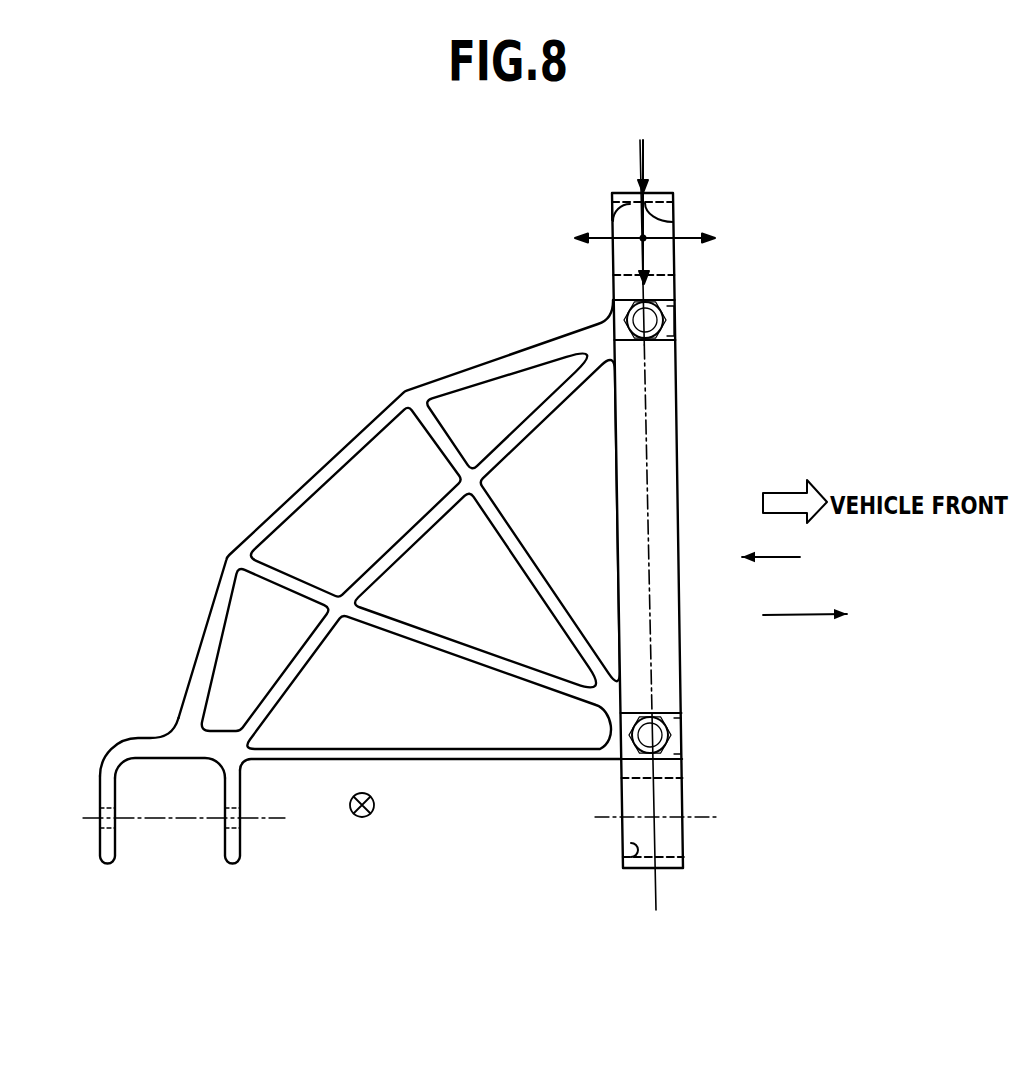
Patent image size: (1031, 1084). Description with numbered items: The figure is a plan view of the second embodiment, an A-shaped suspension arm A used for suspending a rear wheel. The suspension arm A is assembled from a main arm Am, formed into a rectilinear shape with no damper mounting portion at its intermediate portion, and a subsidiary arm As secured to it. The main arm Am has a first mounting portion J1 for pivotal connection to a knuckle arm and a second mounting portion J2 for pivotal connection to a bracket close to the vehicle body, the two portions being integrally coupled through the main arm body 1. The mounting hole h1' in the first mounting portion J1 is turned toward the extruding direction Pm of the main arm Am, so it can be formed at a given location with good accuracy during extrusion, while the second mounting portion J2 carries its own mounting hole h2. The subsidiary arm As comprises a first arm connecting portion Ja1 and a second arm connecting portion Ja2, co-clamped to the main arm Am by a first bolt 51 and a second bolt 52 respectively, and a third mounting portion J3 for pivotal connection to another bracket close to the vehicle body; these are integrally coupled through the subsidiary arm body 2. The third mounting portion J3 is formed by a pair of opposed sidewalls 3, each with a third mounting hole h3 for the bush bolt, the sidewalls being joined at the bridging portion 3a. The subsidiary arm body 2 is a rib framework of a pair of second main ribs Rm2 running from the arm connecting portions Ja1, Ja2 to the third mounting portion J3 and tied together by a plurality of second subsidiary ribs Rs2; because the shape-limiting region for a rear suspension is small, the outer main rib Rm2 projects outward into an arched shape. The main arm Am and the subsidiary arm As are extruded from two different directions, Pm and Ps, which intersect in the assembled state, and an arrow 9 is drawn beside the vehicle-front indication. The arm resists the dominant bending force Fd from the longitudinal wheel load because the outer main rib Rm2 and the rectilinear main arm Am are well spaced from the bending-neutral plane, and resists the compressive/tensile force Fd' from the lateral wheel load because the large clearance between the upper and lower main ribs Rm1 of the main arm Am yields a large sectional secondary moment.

The main arm body 1 is at (645, 510).
The subsidiary arm body 2 is at (325, 578).
The opposed sidewalls 3 is at (100, 862).
The fork bridge portion 3a is at (222, 840).
The load direction arrow 9 is at (830, 573).
The first bolt 51 is at (676, 313).
The second bolt 52 is at (680, 716).
The suspension arm A is at (513, 238).
The subsidiary arm As is at (456, 370).
The main arm Am is at (608, 279).
The main ribs of main arm Rm1 is at (669, 462).
The second main ribs Rm2 is at (330, 462).
The second subsidiary ribs Rs2 is at (423, 537).
The first mounting portion J1 is at (670, 188).
The second mounting portion J2 is at (693, 845).
The third mounting portion J3 is at (94, 782).
The first arm connecting portion Ja1 is at (683, 338).
The second arm connecting portion Ja2 is at (680, 745).
The upper joint height h1' is at (577, 194).
The lower joint height h2 is at (628, 845).
The third mounting hole h3 is at (237, 826).
The compressive/tensile force Fd' is at (694, 212).
The bending force Fd is at (657, 262).
The extruding direction for main arm Pm is at (800, 615).
The force on arm (into page) Ps is at (372, 815).